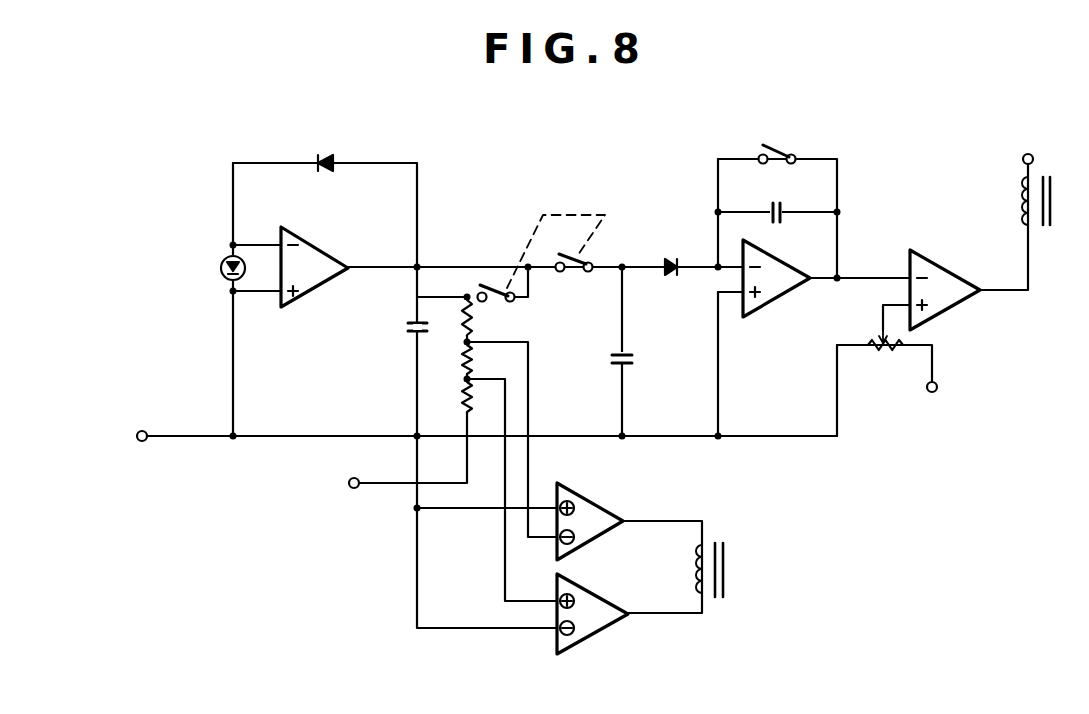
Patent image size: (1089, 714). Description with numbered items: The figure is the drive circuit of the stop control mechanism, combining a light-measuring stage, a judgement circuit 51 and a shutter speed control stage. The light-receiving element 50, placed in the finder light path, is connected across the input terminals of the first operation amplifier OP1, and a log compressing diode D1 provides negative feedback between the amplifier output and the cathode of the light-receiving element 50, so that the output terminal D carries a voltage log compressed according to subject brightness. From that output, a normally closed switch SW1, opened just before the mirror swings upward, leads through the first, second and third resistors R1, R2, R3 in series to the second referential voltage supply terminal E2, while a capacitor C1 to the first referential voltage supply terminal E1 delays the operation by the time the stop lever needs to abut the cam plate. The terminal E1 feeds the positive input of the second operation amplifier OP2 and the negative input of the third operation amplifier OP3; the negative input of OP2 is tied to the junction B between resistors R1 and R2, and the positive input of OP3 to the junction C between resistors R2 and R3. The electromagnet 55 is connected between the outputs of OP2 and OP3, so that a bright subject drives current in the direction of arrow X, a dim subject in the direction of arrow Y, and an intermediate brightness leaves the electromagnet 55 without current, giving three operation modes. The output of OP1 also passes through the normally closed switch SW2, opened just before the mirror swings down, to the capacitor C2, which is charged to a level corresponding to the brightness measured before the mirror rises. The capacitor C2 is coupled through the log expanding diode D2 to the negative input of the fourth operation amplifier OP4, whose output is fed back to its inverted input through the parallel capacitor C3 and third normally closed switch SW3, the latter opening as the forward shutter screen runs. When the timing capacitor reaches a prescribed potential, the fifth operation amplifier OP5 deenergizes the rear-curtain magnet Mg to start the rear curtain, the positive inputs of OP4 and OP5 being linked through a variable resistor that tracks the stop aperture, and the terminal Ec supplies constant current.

The light-receiving element 50 is at (221, 265).
The judgement circuit 51 is at (461, 217).
The electromagnet 55 is at (726, 571).
The log compressing diode D1 is at (327, 176).
The log expanding diode D2 is at (676, 283).
The first operation amplifier OP1 is at (322, 256).
The second operation amplifier OP2 is at (593, 509).
The third operation amplifier OP3 is at (596, 603).
The fourth operation amplifier OP4 is at (781, 292).
The fifth operation amplifier OP5 is at (954, 294).
The output terminal D is at (418, 266).
The junction B is at (469, 344).
The junction C is at (469, 381).
The capacitor C1 is at (403, 324).
The capacitor C2 is at (640, 363).
The capacitor C3 is at (778, 226).
The first resistor R1 is at (455, 317).
The second resistor R2 is at (452, 359).
The third resistor R3 is at (452, 397).
The normally closed switch SW1 is at (505, 299).
The normally closed switch SW2 is at (578, 276).
The third normally closed switch SW3 is at (774, 144).
The magnet Mg is at (1055, 201).
The constant current supply terminal Ec is at (905, 375).
The first referential voltage supply terminal E1 is at (141, 462).
The second referential voltage supply terminal E2 is at (356, 504).
The arrow X is at (696, 598).
The arrow Y is at (697, 511).